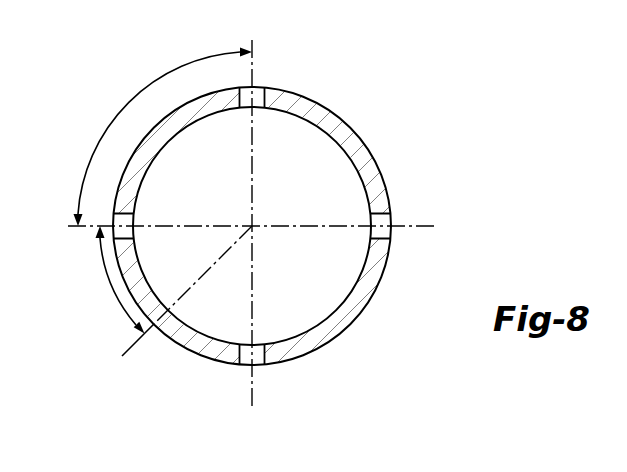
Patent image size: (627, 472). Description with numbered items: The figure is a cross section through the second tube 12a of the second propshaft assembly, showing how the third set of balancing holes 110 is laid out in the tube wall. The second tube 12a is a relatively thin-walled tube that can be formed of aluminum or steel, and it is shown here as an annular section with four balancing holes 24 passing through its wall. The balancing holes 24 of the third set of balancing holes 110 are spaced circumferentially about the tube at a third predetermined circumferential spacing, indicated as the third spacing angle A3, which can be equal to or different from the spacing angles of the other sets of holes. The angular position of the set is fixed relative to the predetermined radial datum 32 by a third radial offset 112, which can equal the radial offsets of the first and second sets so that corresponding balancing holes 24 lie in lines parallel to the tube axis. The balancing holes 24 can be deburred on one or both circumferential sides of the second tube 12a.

The second tube 12a is at (353, 130).
The balancing holes 24 is at (257, 92).
The predetermined radial datum 32 is at (153, 326).
The third spacing angle A3 is at (133, 101).
The third radial offset 112 is at (113, 290).
The third set of balancing holes 110 is at (393, 218).